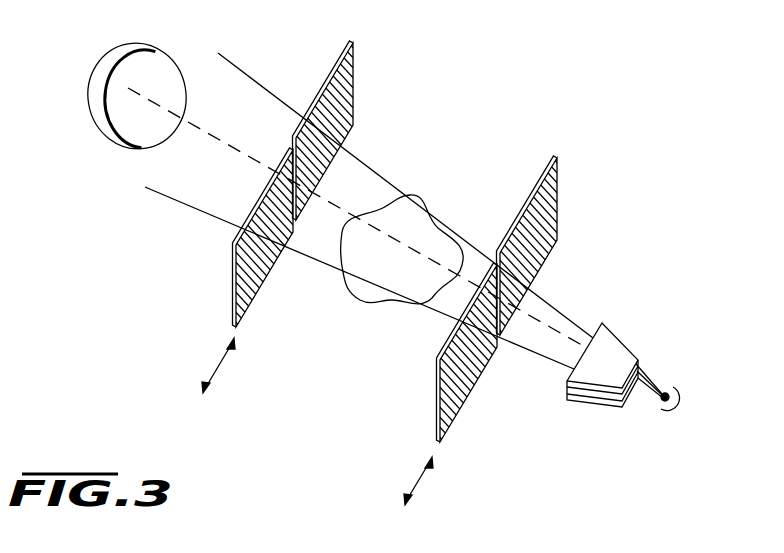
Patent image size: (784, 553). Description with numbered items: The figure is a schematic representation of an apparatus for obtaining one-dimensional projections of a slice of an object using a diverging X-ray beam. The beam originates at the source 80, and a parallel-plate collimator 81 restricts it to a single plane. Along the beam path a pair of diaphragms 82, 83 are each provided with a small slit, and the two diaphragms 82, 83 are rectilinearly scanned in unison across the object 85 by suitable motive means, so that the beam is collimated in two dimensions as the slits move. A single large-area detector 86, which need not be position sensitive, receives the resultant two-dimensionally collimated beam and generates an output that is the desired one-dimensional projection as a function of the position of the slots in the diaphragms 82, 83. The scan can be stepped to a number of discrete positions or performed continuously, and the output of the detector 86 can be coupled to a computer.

The source 80 is at (667, 392).
The parallel-plate collimator 81 is at (605, 352).
The diaphragm 82 is at (552, 188).
The diaphragm 83 is at (352, 63).
The object 85 is at (408, 222).
The large-area detector 86 is at (97, 70).